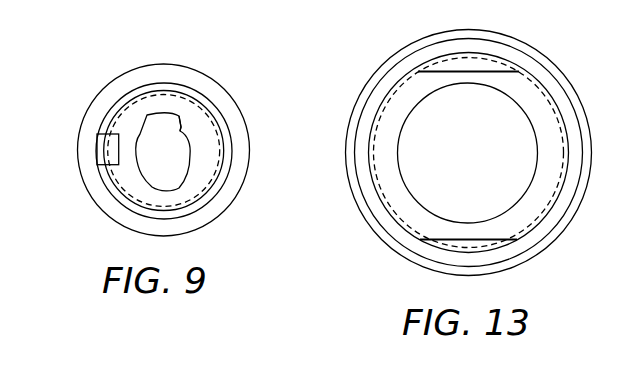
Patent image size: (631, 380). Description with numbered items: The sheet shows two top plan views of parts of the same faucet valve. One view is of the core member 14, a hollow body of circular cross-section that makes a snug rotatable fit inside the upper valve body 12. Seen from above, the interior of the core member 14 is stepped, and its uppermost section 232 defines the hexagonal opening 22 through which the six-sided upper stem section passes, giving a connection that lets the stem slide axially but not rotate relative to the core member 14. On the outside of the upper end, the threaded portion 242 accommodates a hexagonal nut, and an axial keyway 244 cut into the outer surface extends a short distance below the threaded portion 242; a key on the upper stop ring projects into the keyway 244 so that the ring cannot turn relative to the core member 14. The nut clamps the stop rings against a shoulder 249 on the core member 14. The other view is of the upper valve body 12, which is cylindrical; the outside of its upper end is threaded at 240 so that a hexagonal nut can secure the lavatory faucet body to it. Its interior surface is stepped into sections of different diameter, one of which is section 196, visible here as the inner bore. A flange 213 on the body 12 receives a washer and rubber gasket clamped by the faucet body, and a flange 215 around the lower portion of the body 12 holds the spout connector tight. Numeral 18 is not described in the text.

In FIG. 9, the core member 14 is at (205, 230).
In FIG. 9, the shoulder 249 is at (190, 92).
In FIG. 9, the threaded portion 242 is at (125, 102).
In FIG. 9, the axial keyway 244 is at (102, 148).
In FIG. 9, the opening 22 is at (167, 158).
In FIG. 9, the section 232 is at (181, 129).
In FIG. 13, the upper valve body 12 is at (392, 58).
In FIG. 13, the flange 215 is at (530, 45).
In FIG. 13, the flange 213 is at (557, 78).
In FIG. 13, the threads 240 is at (407, 223).
In FIG. 13, the diameter section 196 is at (530, 128).
In FIG. 13, the shaft 18 is at (624, 226).